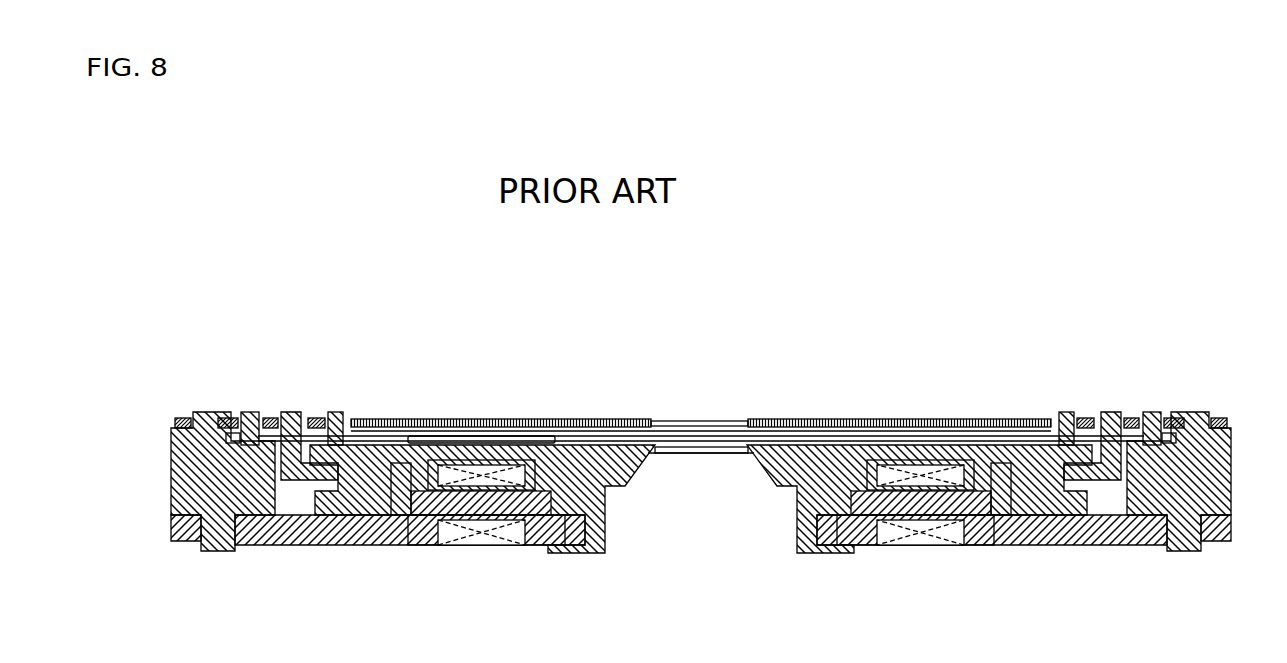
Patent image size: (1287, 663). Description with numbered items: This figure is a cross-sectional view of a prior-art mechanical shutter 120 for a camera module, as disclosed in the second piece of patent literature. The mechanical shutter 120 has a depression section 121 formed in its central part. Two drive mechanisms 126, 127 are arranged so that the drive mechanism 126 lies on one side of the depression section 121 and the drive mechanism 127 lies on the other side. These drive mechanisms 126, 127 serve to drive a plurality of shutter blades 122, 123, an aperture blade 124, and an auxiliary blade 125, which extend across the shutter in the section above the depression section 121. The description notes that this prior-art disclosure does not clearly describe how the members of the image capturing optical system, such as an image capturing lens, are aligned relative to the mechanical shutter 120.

The mechanical shutter 120 is at (1040, 295).
The depression section 121 is at (687, 509).
The shutter blade 122 is at (726, 413).
The shutter blade 123 is at (715, 445).
The aperture blade 124 is at (556, 433).
The auxiliary blade 125 is at (666, 445).
The drive mechanism 126 is at (900, 470).
The drive mechanism 127 is at (462, 470).